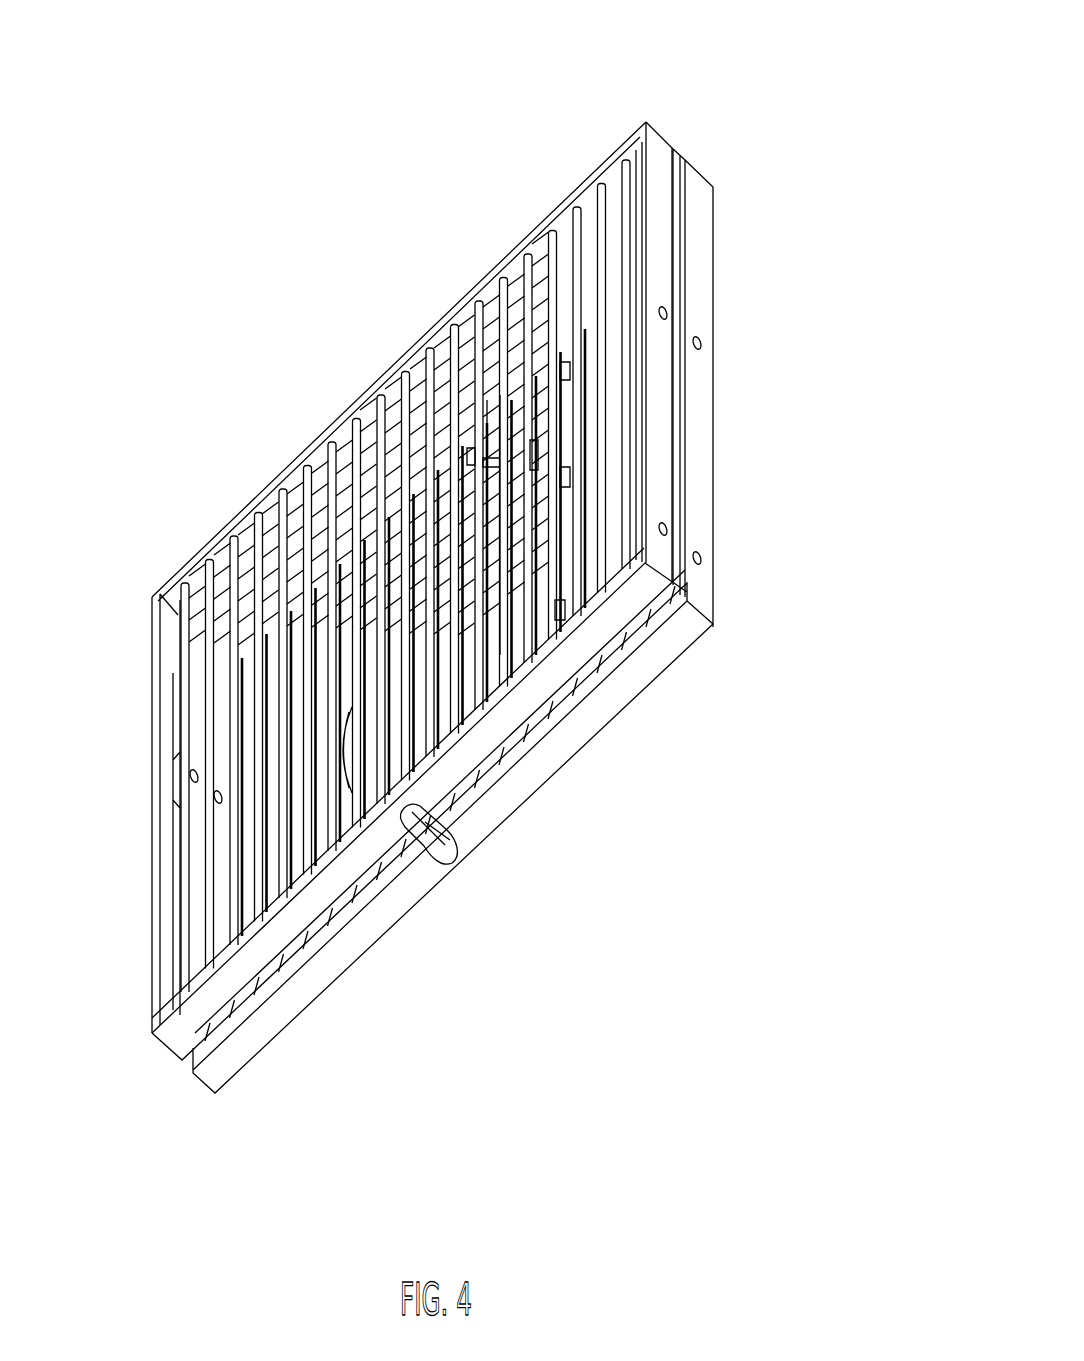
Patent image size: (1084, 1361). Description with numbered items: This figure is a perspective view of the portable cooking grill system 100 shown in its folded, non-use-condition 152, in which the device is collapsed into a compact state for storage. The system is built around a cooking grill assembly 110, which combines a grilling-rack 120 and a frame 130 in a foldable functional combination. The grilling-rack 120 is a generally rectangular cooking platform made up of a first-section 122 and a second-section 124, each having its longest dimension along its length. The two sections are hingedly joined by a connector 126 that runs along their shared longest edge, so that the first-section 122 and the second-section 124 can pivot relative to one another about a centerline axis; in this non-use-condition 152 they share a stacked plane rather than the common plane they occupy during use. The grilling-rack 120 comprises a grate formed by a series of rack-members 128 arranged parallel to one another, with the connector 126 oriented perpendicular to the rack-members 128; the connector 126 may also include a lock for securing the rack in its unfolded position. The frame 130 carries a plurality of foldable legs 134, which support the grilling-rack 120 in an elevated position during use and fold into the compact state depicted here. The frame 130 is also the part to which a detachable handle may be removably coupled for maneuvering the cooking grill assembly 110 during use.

The portable cooking grill system 100 is at (800, 78).
The cooking grill assembly 110 is at (809, 127).
The non-use-condition 152 is at (818, 175).
The rack-members 128 is at (628, 178).
The connector 126 is at (677, 155).
The second-section 124 is at (714, 392).
The first-section 122 is at (628, 328).
The grilling-rack 120 is at (615, 510).
The foldable legs 134 is at (200, 815).
The frame 130 is at (612, 605).